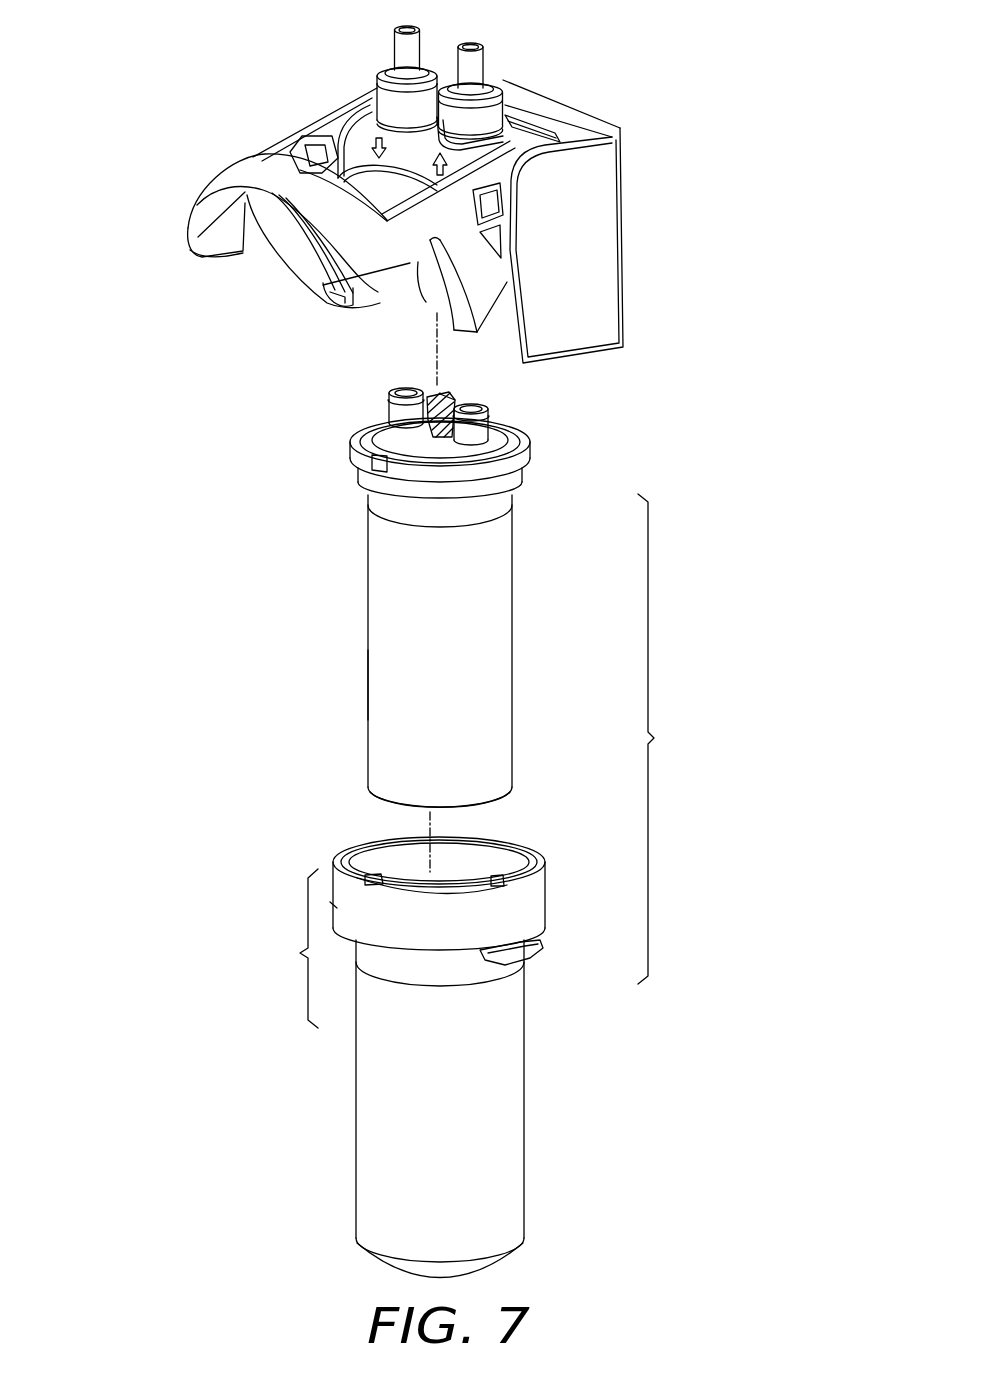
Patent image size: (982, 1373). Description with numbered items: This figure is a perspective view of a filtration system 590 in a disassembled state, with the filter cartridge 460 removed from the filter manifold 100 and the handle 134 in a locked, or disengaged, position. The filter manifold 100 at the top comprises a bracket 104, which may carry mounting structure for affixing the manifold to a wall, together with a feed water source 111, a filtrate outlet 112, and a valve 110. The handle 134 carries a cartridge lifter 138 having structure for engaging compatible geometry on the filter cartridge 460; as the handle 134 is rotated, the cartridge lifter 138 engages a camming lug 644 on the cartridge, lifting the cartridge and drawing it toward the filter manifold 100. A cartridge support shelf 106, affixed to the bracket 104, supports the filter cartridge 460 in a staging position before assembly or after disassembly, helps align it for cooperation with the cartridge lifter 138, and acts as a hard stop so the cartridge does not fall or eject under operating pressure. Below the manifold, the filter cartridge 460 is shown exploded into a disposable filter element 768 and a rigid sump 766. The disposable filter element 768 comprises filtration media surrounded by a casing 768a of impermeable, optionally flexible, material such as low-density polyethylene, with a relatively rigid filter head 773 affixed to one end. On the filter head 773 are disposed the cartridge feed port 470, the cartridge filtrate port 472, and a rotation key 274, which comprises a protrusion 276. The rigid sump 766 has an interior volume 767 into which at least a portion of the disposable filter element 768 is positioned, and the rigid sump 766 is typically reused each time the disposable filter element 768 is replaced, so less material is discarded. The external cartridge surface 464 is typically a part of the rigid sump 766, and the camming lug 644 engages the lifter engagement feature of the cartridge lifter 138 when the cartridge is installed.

The filtration system 590 is at (110, 163).
The filter manifold 100 is at (637, 188).
The bracket 104 is at (600, 268).
The valve 110 is at (513, 135).
The feed water source 111 is at (383, 100).
The filtrate outlet 112 is at (492, 115).
The handle 134 is at (251, 170).
The cartridge lifter 138 is at (277, 255).
The cartridge support shelf 106 is at (320, 290).
The filter cartridge 460 is at (476, 808).
The filter head 773 is at (526, 445).
The rotation key 274 is at (428, 393).
The protrusion 276 is at (445, 394).
The cartridge feed port 470 is at (391, 396).
The cartridge filtrate port 472 is at (488, 406).
The disposable filter element 768 is at (383, 592).
The casing 768a is at (368, 680).
The interior volume 767 is at (383, 858).
The external cartridge surface 464 is at (285, 948).
The camming lug 644 is at (531, 954).
The rigid sump 766 is at (368, 1075).